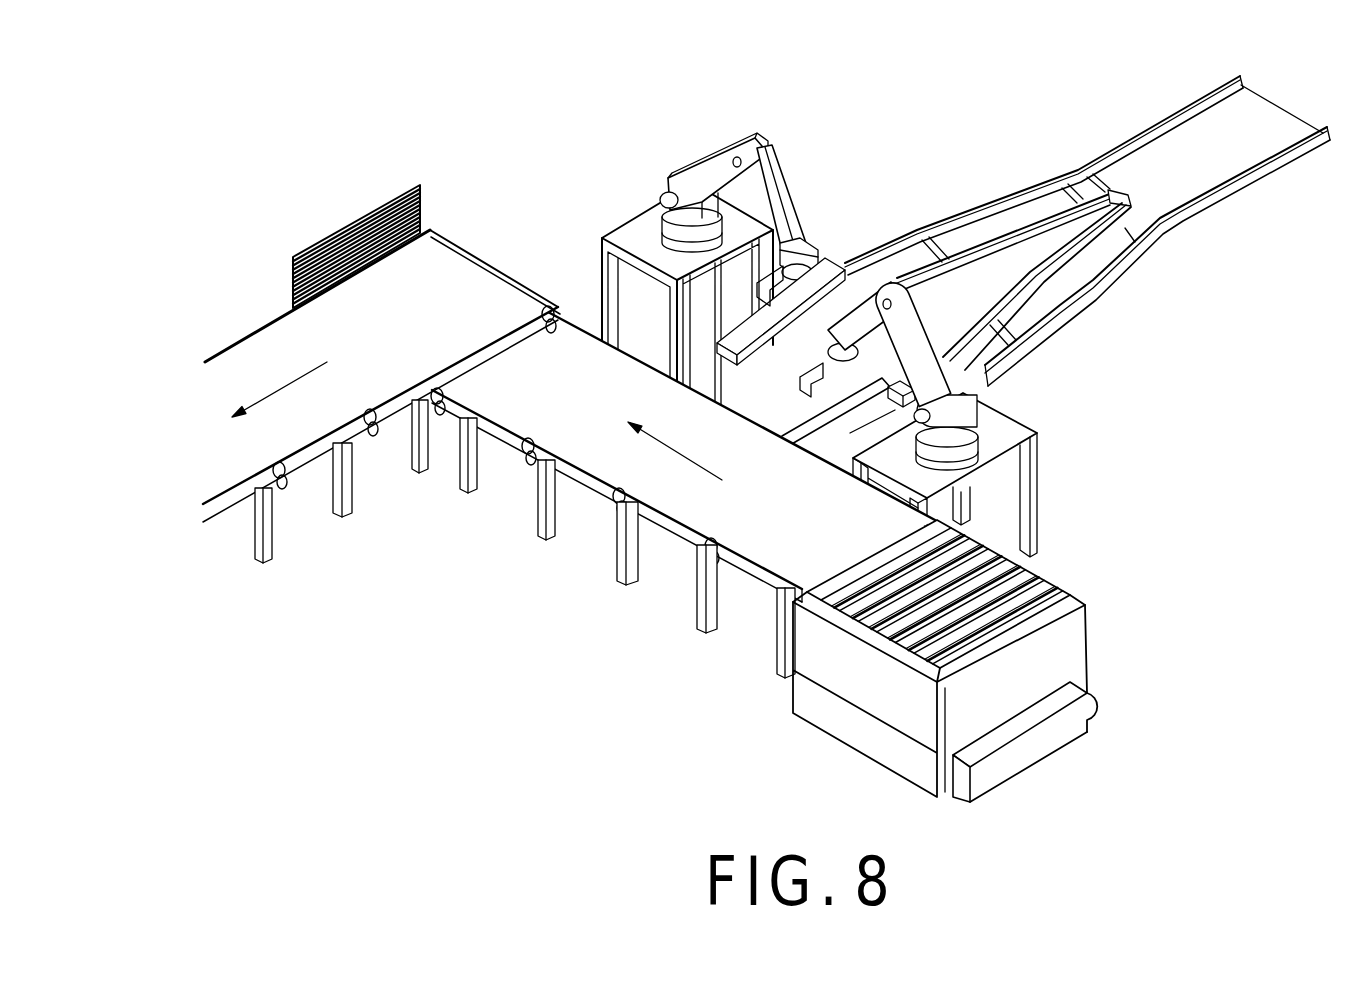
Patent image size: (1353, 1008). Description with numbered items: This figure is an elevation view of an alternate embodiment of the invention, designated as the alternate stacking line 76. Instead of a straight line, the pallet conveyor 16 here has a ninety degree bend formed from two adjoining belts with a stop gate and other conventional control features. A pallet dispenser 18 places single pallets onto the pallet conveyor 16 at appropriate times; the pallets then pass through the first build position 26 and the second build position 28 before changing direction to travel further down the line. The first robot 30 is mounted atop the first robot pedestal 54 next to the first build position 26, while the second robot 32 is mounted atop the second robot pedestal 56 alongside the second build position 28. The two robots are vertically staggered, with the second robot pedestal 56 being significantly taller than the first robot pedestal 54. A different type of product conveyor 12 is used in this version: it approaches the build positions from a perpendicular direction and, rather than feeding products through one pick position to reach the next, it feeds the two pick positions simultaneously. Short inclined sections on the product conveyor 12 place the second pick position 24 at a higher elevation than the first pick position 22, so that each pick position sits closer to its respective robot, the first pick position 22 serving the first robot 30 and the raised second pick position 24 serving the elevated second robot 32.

The product conveyor 12 is at (1165, 175).
The pallet conveyor 16 is at (230, 455).
The pallet dispenser 18 is at (1027, 675).
The first pick position 22 is at (1010, 365).
The second pick position 24 is at (770, 343).
The first build position 26 is at (808, 527).
The second build position 28 is at (598, 388).
The first robot 30 is at (943, 428).
The second robot 32 is at (713, 178).
The first robot pedestal 54 is at (1035, 497).
The second robot pedestal 56 is at (605, 303).
The alternate stacking line 76 is at (1094, 790).